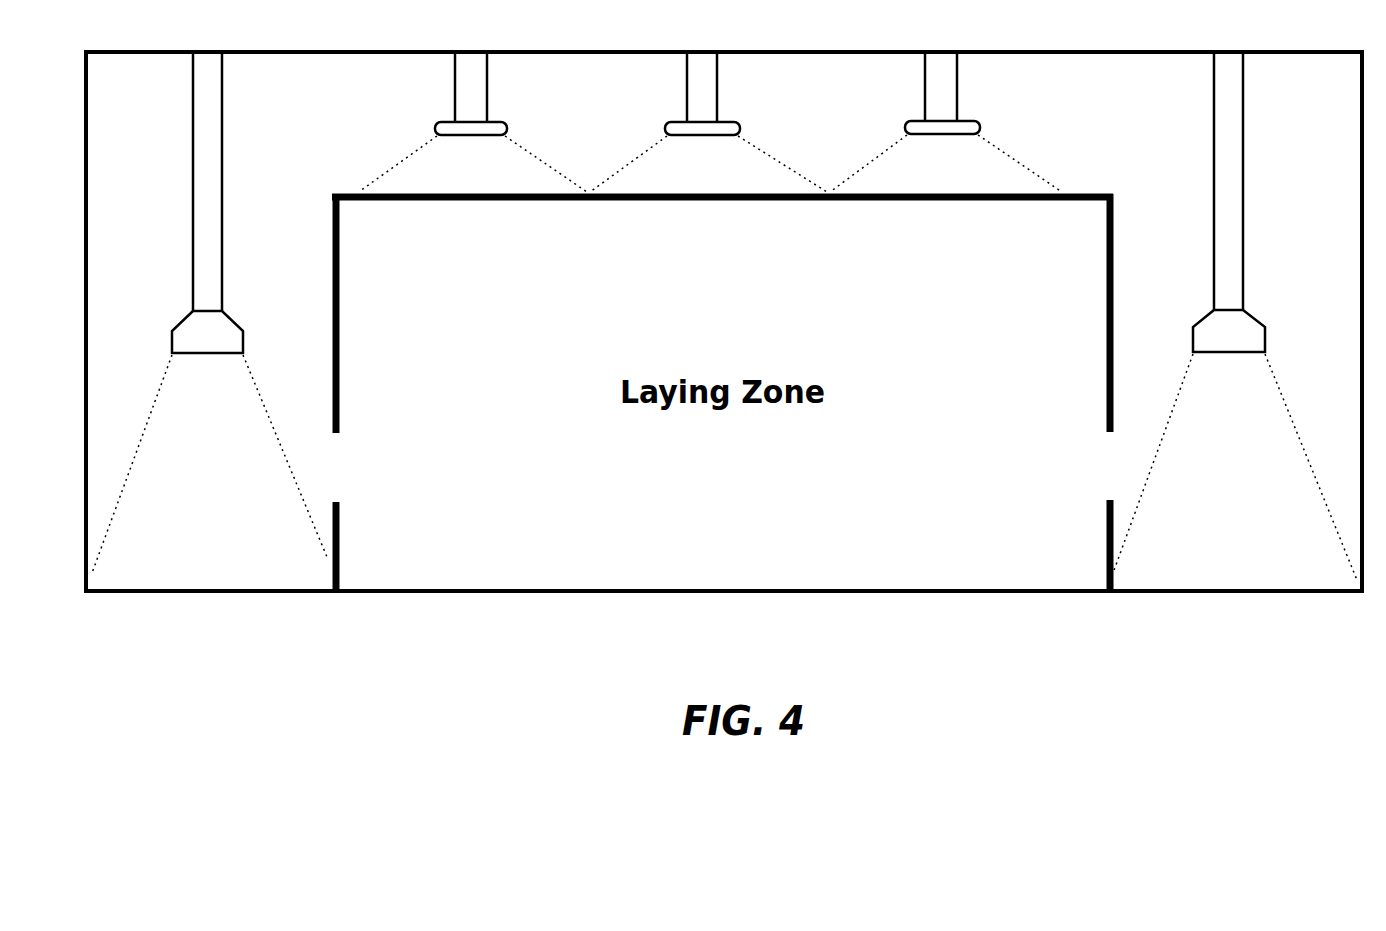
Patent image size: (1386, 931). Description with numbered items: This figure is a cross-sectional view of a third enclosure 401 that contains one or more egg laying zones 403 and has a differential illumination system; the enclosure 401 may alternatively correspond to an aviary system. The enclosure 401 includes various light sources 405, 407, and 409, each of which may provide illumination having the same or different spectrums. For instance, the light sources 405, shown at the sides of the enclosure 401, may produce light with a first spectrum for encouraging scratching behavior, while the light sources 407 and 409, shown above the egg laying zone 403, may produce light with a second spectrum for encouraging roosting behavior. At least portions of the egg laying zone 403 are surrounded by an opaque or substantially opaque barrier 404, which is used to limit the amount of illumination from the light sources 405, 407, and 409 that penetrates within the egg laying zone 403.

The third enclosure 401 is at (1102, 51).
The egg laying zone 403 is at (1087, 270).
The opaque barrier 404 is at (1090, 194).
The light sources 405 is at (225, 333).
The light sources 407 is at (493, 124).
The light source 409 is at (723, 124).